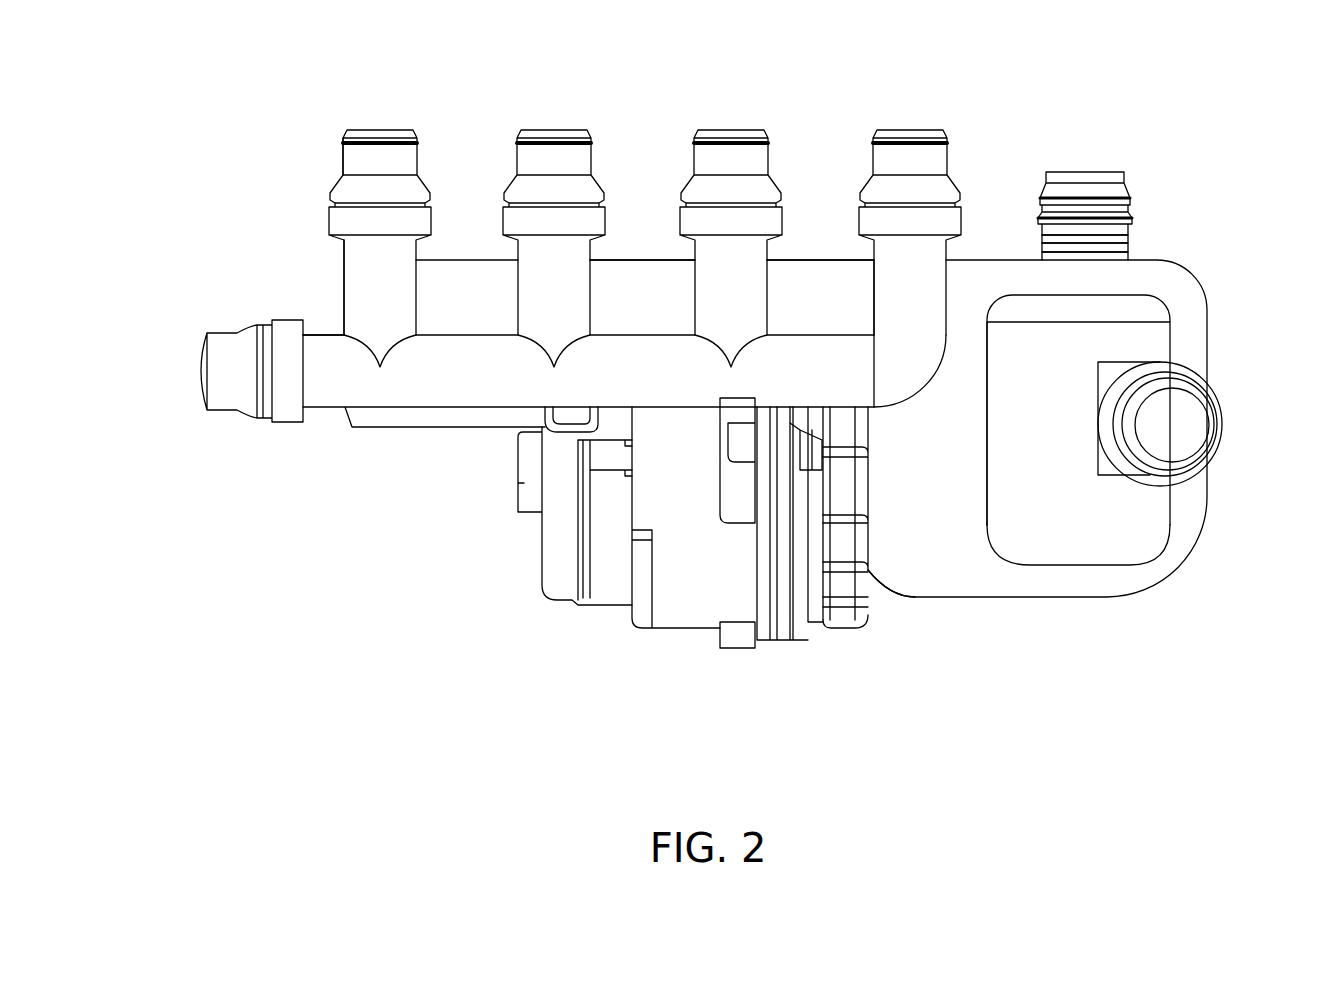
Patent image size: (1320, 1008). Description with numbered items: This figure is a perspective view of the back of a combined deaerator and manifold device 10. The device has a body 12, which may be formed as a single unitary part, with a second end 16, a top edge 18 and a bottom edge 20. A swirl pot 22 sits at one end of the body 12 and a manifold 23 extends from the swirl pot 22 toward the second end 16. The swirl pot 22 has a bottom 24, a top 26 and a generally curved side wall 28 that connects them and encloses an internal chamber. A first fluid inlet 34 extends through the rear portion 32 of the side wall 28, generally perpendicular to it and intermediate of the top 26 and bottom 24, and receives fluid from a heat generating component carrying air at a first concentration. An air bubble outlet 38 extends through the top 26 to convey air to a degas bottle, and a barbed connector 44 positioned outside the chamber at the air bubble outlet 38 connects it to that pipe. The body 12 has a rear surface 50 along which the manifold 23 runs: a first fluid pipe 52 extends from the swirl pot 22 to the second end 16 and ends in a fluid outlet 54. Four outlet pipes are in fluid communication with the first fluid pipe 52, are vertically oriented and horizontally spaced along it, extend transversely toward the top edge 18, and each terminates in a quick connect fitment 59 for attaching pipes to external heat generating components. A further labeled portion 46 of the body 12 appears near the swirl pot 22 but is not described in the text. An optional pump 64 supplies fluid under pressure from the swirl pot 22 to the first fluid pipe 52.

The combined deaerator and manifold device 10 is at (240, 110).
The body 12 is at (470, 310).
The second end 16 is at (343, 296).
The top edge 18 is at (638, 255).
The bottom edge 20 is at (1073, 495).
The swirl pot 22 is at (910, 524).
The manifold 23 is at (918, 266).
The bottom 24 is at (1130, 548).
The top 26 is at (1142, 308).
The side wall 28 is at (1025, 477).
The rear portion 32 is at (1012, 427).
The first fluid inlet 34 is at (1180, 430).
The air bubble outlet 38 is at (1085, 170).
The barbed connector 44 is at (1130, 190).
The housing mount 46 is at (905, 557).
The rear surface 50 is at (824, 281).
The first fluid pipe 52 is at (430, 385).
The fluid outlet 54 is at (180, 388).
The quick connect fitment 59 is at (306, 156).
The pump 64 is at (655, 632).